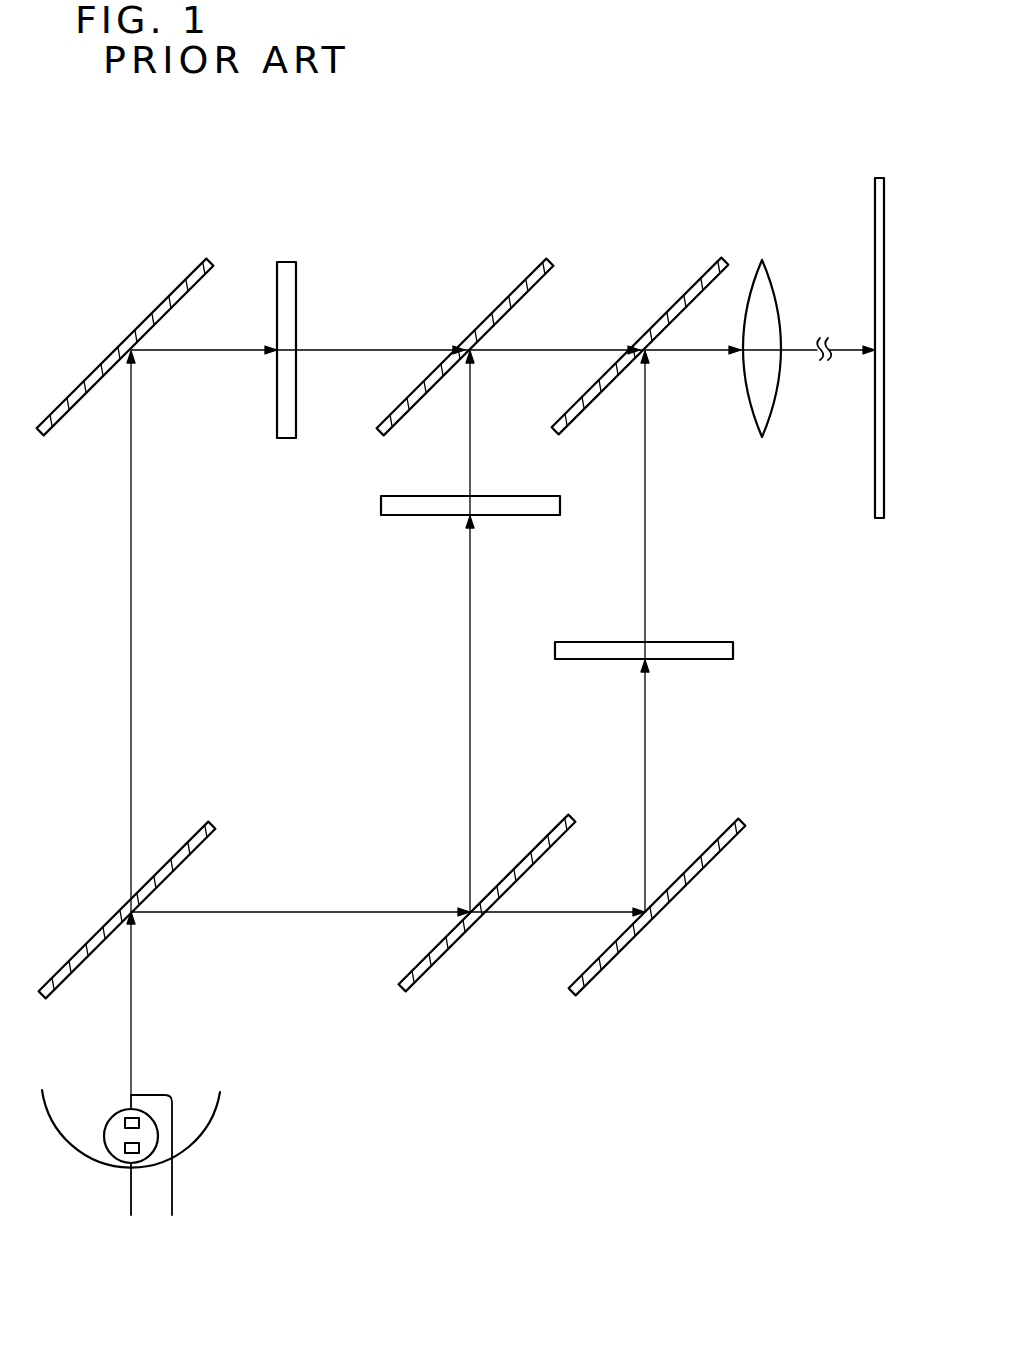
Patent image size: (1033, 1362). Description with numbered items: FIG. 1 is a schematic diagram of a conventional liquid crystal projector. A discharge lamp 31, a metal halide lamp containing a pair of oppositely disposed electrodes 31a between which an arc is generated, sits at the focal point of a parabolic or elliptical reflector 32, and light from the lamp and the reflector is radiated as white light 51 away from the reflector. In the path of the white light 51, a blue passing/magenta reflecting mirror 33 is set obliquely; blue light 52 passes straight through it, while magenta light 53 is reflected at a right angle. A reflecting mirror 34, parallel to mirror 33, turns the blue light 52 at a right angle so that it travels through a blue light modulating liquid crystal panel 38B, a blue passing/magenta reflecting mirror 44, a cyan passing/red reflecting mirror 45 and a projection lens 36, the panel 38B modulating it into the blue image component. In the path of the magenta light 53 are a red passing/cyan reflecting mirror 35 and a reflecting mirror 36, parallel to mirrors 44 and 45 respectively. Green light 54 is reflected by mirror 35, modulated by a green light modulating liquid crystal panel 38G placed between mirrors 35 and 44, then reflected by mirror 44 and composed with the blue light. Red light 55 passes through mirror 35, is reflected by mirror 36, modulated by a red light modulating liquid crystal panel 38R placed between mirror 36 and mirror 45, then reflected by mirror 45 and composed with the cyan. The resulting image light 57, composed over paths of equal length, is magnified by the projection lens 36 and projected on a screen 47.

The discharge lamp 31 is at (98, 1117).
The electrodes 31a is at (124, 1148).
The reflector 32 is at (217, 1122).
The blue passing/magenta reflecting mirror 33 is at (78, 945).
The reflecting mirror 34 is at (172, 288).
The red passing/cyan reflecting mirror 35 is at (448, 952).
The projection lens 36 is at (623, 952).
The blue light modulating liquid crystal panel 38B is at (287, 261).
The green light modulating liquid crystal panel 38G is at (381, 503).
The red light modulating liquid crystal panel 38R is at (687, 642).
The blue passing/magenta reflecting mirror 44 is at (508, 290).
The cyan passing/red reflecting mirror 45 is at (676, 290).
The screen 47 is at (873, 472).
The white light 51 is at (131, 1000).
The blue light 52 is at (131, 600).
The magenta light 53 is at (332, 912).
The green light 54 is at (470, 745).
The red light 55 is at (533, 913).
The image light 57 is at (687, 352).